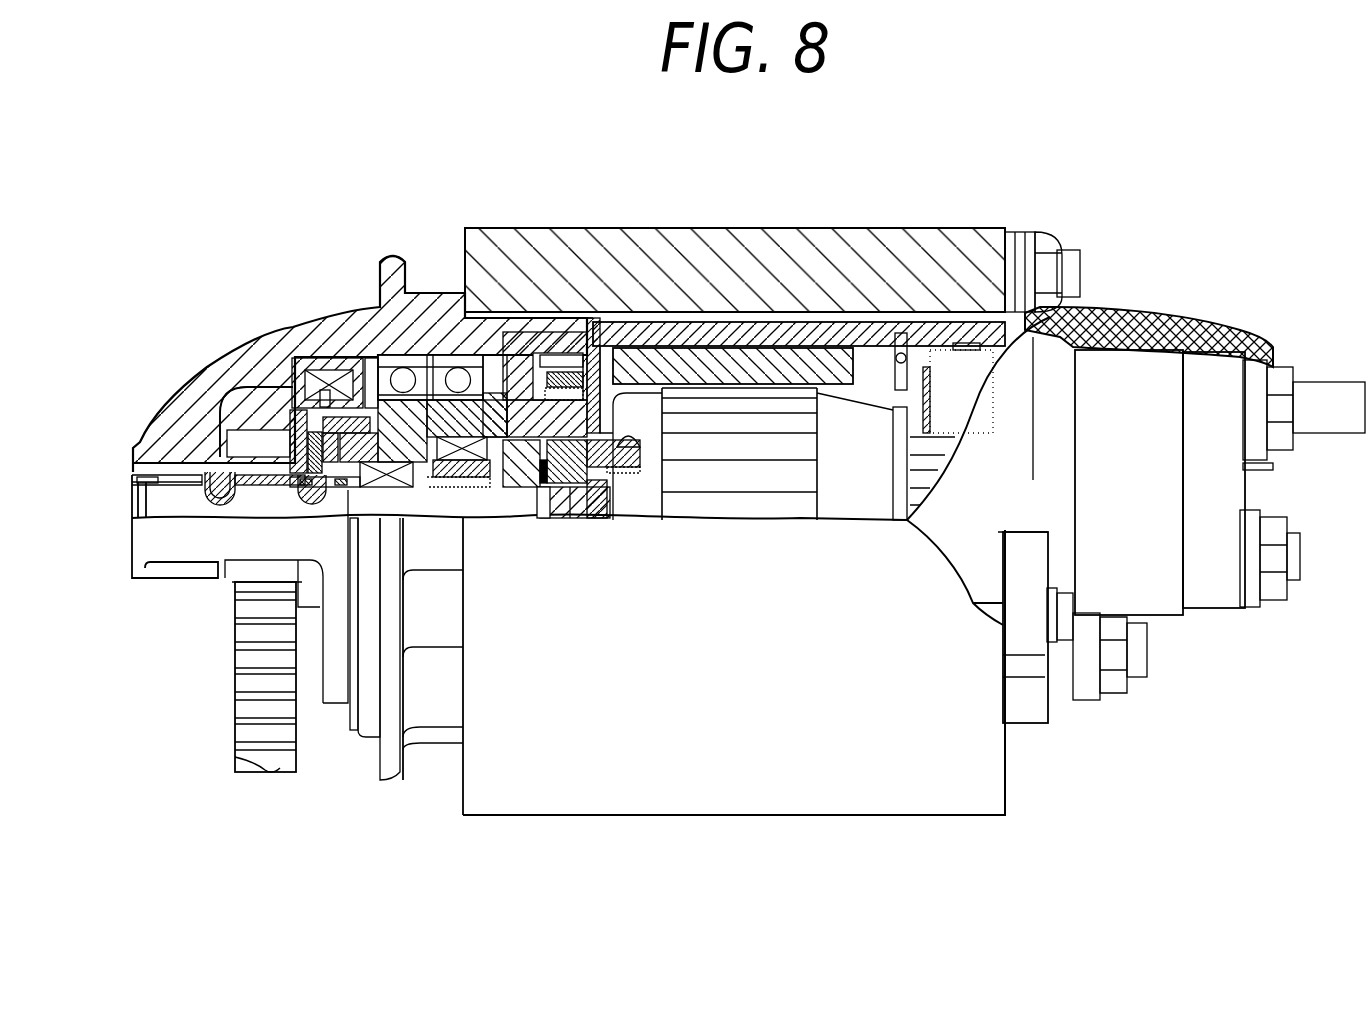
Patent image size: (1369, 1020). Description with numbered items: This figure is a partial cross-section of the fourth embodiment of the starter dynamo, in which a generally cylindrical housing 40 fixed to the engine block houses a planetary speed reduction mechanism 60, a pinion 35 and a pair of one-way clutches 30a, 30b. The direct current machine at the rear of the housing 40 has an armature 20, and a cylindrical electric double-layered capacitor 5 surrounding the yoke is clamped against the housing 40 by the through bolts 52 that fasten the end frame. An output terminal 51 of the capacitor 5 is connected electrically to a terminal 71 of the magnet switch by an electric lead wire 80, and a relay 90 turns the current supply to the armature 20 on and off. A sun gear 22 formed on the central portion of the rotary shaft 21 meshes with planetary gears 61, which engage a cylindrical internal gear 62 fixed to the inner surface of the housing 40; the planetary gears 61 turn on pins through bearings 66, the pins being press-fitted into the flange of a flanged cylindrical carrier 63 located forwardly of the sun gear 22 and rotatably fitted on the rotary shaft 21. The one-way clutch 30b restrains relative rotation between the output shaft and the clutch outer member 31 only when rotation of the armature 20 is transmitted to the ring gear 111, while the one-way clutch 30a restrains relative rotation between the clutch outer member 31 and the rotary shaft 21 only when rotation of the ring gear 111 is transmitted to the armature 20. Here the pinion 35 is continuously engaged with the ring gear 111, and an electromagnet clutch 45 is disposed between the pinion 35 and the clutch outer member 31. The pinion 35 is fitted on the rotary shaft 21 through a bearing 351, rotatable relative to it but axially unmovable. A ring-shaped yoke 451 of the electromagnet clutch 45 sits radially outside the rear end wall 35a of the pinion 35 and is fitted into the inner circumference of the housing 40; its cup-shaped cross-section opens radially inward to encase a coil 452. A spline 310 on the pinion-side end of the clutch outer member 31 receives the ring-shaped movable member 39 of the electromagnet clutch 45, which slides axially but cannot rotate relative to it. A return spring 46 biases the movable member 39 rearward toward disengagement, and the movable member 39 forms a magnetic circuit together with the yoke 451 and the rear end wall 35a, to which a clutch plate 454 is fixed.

The electric double-layered capacitor 5 is at (735, 255).
The armature 20 is at (858, 480).
The rotary shaft 21 is at (517, 507).
The sun gear 22 is at (598, 518).
The one-way clutch 30a is at (428, 505).
The one-way clutch 30b is at (490, 487).
The clutch outer member 31 is at (425, 300).
The pinion 35 is at (205, 402).
The rear end wall 35a is at (245, 392).
The movable member 39 is at (315, 400).
The housing 40 is at (393, 280).
The electromagnet clutch 45 is at (360, 357).
The return spring 46 is at (340, 490).
The output terminal 51 is at (1068, 250).
The through bolts 52 is at (1110, 652).
The planetary speed reduction mechanism 60 is at (520, 375).
The planetary gears 61 is at (578, 330).
The internal gear 62 is at (567, 390).
The carrier 63 is at (500, 297).
The bearings 66 is at (573, 518).
The terminal 71 is at (1335, 405).
The electric lead wire 80 is at (1155, 370).
The relay 90 is at (1185, 327).
The ring gear 111 is at (279, 760).
The spline 310 is at (335, 400).
The bearing 351 is at (268, 488).
The yoke 451 is at (295, 400).
The coil 452 is at (350, 400).
The clutch plate 454 is at (298, 488).